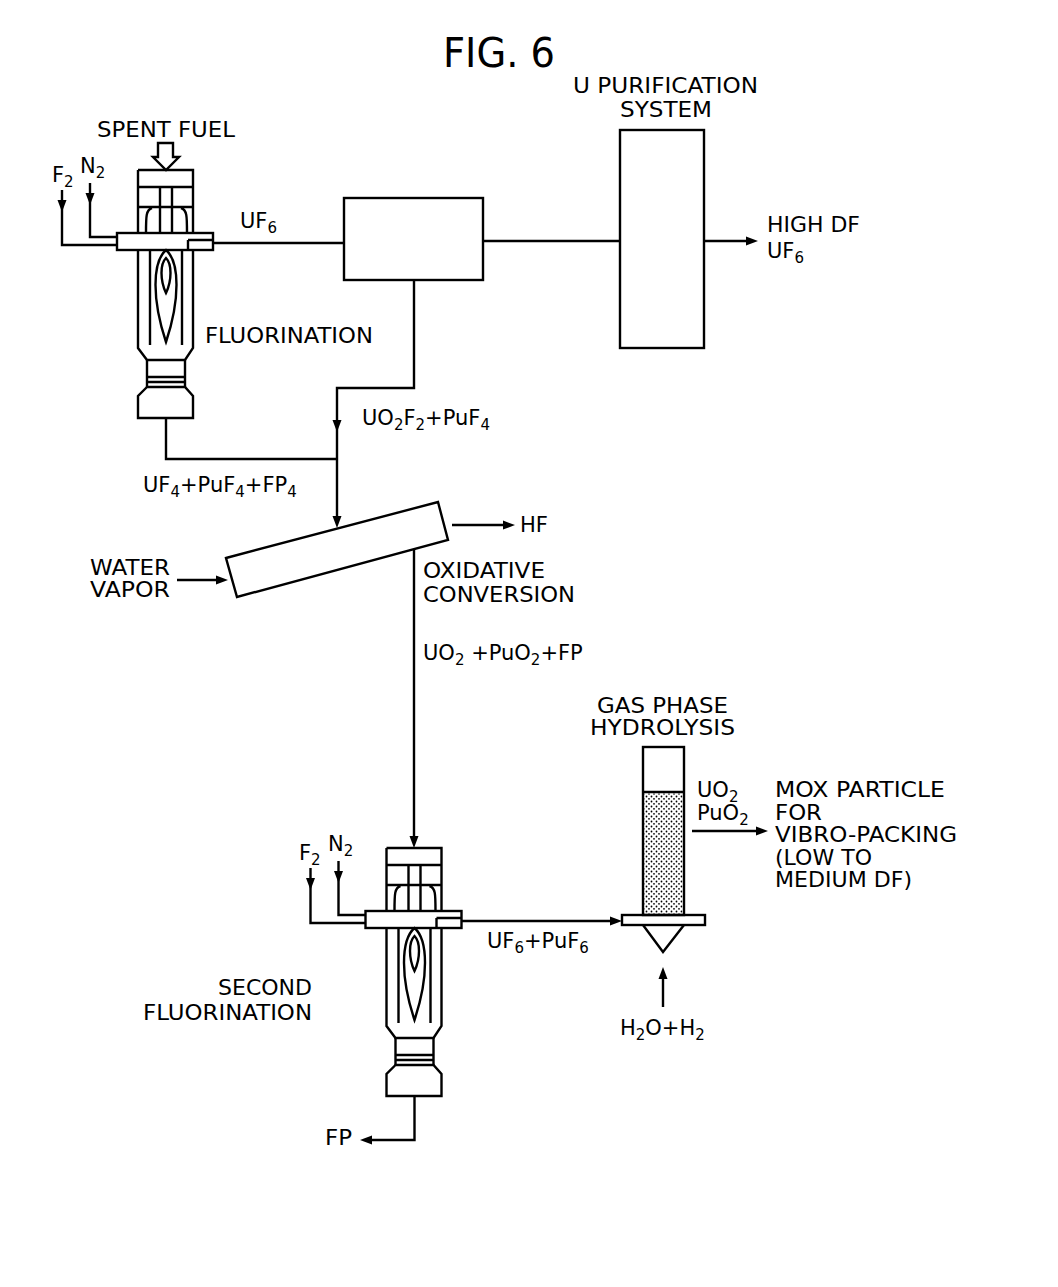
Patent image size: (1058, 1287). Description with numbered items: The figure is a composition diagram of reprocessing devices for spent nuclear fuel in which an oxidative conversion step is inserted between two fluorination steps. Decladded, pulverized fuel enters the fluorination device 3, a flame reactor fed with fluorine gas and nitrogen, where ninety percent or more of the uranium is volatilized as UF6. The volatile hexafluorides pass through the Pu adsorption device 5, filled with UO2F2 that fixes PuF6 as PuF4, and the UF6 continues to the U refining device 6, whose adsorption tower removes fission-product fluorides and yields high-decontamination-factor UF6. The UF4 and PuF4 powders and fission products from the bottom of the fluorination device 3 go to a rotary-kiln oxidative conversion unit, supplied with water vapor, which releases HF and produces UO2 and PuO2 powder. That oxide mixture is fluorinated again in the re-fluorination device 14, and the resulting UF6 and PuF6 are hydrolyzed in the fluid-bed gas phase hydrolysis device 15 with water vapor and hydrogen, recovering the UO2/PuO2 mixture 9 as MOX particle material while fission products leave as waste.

The fluorination device 3 is at (193, 303).
The Pu adsorption device 5 is at (455, 198).
The U refining device 6 is at (704, 188).
The UO2/PuO2 mixture of oxides 9 is at (290, 585).
The re-fluorination device 14 is at (386, 988).
The gas phase hydrolysis device 15 is at (643, 853).